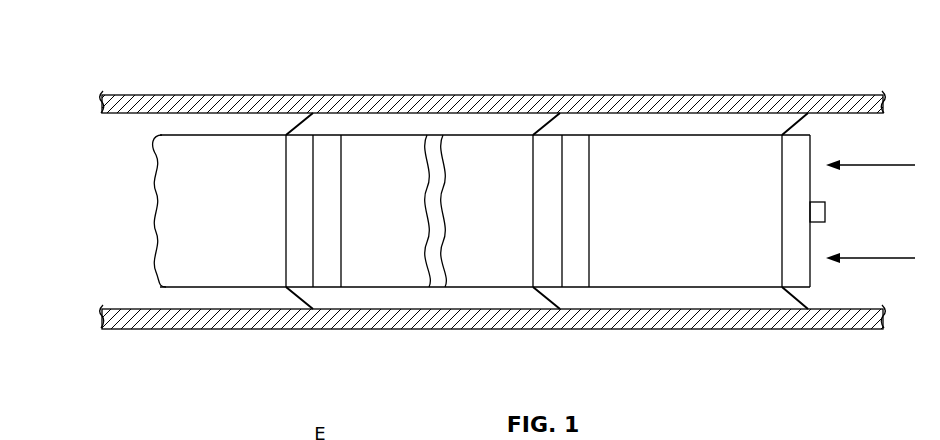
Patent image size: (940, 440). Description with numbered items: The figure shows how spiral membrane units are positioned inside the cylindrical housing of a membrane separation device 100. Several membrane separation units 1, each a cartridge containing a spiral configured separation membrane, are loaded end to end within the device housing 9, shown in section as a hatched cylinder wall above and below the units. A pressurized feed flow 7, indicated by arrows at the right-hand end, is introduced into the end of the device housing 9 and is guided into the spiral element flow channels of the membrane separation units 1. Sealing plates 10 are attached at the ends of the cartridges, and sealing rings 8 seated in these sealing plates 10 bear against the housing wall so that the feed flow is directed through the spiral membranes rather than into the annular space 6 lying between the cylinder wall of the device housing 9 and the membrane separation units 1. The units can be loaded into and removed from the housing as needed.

The membrane separation device 100 is at (106, 72).
The membrane separation unit 1 is at (236, 160).
The annular space 6 is at (465, 130).
The pressurized feed flow 7 is at (903, 165).
The sealing rings 8 is at (298, 112).
The device housing 9 is at (590, 95).
The sealing plates 10 is at (297, 222).